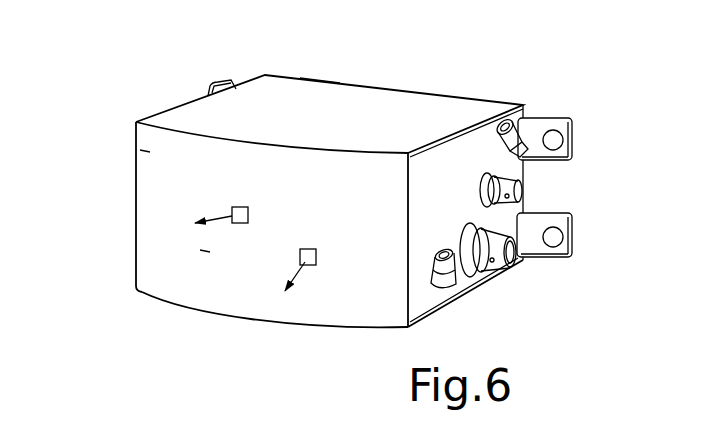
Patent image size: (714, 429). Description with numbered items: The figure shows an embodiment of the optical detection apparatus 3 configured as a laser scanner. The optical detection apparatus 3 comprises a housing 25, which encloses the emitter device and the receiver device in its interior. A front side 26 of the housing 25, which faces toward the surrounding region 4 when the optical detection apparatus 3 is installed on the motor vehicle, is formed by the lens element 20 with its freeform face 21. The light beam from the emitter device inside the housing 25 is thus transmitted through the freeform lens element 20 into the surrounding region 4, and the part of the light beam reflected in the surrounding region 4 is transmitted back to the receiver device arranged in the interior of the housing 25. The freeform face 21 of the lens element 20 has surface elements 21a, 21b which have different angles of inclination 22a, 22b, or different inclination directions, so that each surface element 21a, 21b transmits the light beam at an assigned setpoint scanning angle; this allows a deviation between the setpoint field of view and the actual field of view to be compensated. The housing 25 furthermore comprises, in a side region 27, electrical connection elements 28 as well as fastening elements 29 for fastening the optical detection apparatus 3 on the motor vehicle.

The optical detection apparatus 3 is at (489, 74).
The surrounding region 4 is at (93, 249).
The lens element 20 is at (148, 192).
The freeform face 21 is at (221, 241).
The surface element 21a is at (240, 224).
The surface element 21b is at (310, 266).
The angle of inclination 22a is at (224, 213).
The angle of inclination 22b is at (303, 250).
The housing 25 is at (343, 95).
The front side 26 is at (160, 154).
The side region 27 is at (513, 172).
The electrical connection elements 28 is at (490, 266).
The fastening elements 29 is at (553, 138).